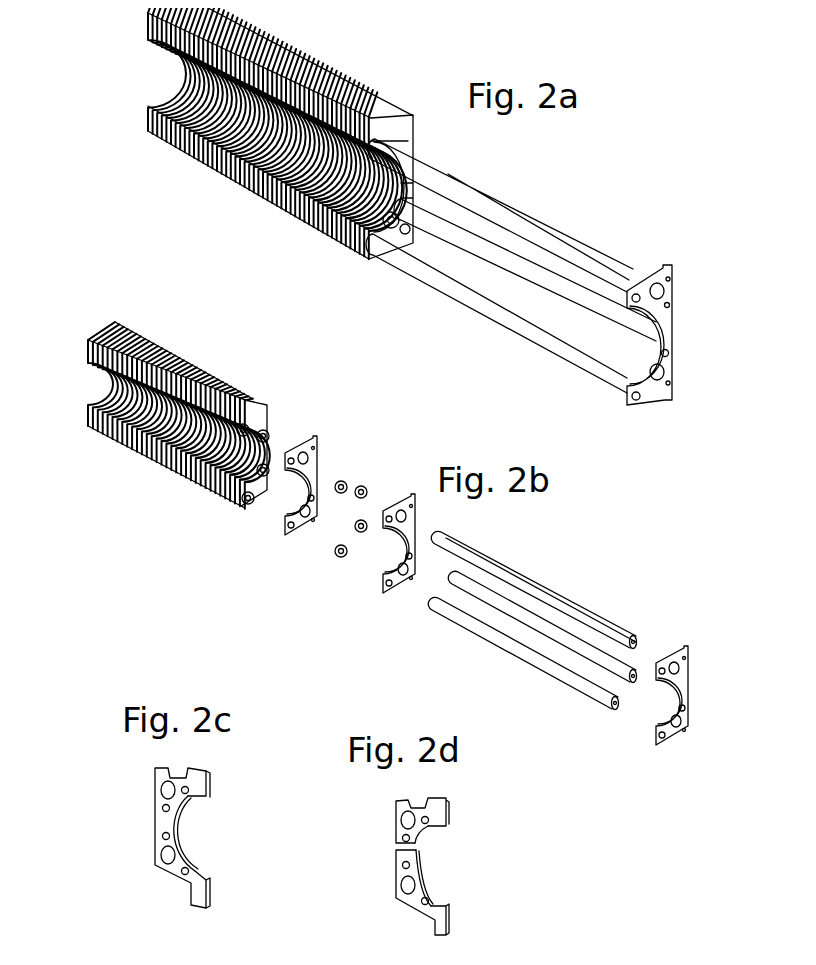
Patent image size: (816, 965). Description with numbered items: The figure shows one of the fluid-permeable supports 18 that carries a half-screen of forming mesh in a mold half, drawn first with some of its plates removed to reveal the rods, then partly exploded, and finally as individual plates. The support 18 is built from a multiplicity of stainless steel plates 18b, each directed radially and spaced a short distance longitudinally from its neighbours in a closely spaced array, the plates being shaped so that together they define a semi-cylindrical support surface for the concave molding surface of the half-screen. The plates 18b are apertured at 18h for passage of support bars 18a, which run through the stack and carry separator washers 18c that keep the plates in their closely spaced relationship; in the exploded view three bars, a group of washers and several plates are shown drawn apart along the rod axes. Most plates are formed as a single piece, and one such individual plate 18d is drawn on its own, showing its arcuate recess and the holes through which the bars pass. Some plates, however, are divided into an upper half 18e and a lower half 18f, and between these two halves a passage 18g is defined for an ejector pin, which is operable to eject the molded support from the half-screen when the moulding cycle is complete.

In FIG. 2a, the fluid-permeable support 18 is at (283, 207).
In FIG. 2a, the support bars 18a is at (425, 266).
In FIG. 2a, the stainless steel plates 18b is at (640, 373).
In FIG. 2b, the stainless steel plates 18b is at (307, 443).
In FIG. 2b, the separator washers 18c is at (333, 550).
In FIG. 2c, the bracket plate 18d is at (155, 812).
In FIG. 2d, the upper half 18e is at (388, 819).
In FIG. 2d, the lower half 18f is at (388, 859).
In FIG. 2d, the passage 18g is at (410, 836).
In FIG. 2b, the apertures 18h is at (681, 657).
In FIG. 2c, the apertures 18h is at (179, 792).